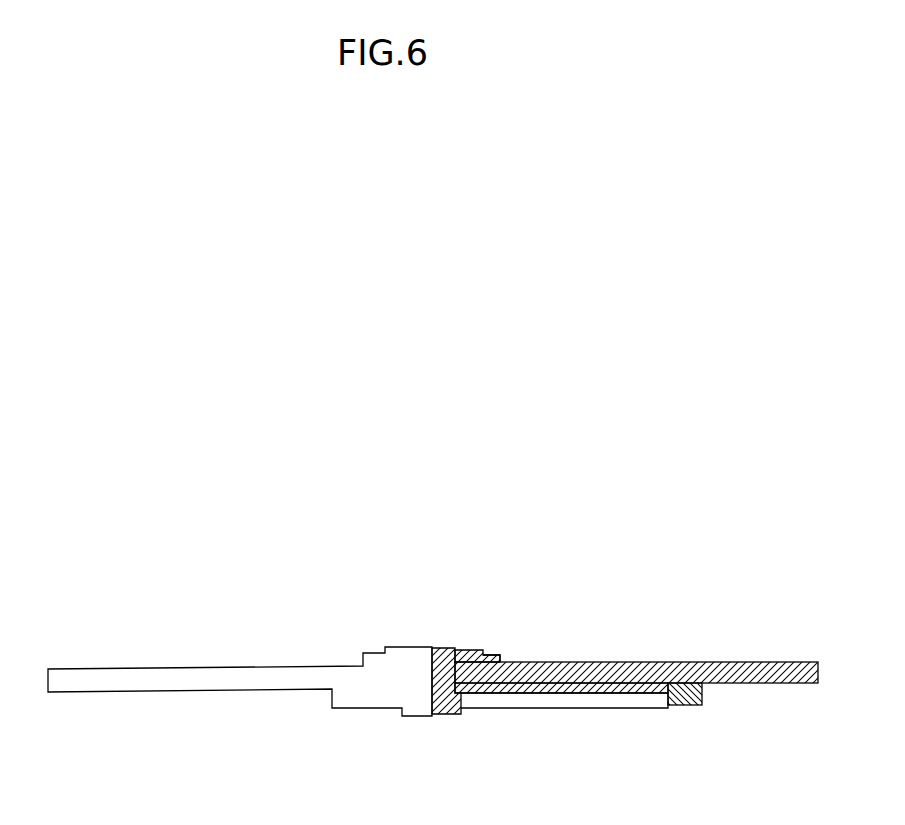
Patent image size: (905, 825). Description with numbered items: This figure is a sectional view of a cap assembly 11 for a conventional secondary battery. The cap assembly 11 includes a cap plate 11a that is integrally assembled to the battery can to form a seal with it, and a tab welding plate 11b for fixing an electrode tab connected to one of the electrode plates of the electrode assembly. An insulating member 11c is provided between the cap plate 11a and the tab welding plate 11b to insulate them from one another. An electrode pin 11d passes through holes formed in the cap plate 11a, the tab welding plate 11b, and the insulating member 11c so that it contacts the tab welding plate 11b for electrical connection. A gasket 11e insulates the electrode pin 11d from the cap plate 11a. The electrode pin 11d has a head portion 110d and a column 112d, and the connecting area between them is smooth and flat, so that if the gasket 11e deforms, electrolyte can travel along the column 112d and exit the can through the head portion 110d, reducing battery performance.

The cap assembly 11 is at (473, 635).
The cap plate 11a is at (750, 660).
The tab welding plate 11b is at (640, 702).
The insulating member 11c is at (701, 698).
The electrode pin 11d is at (625, 644).
The gasket 11e is at (503, 656).
The head portion 110d is at (472, 645).
The column 112d is at (442, 650).